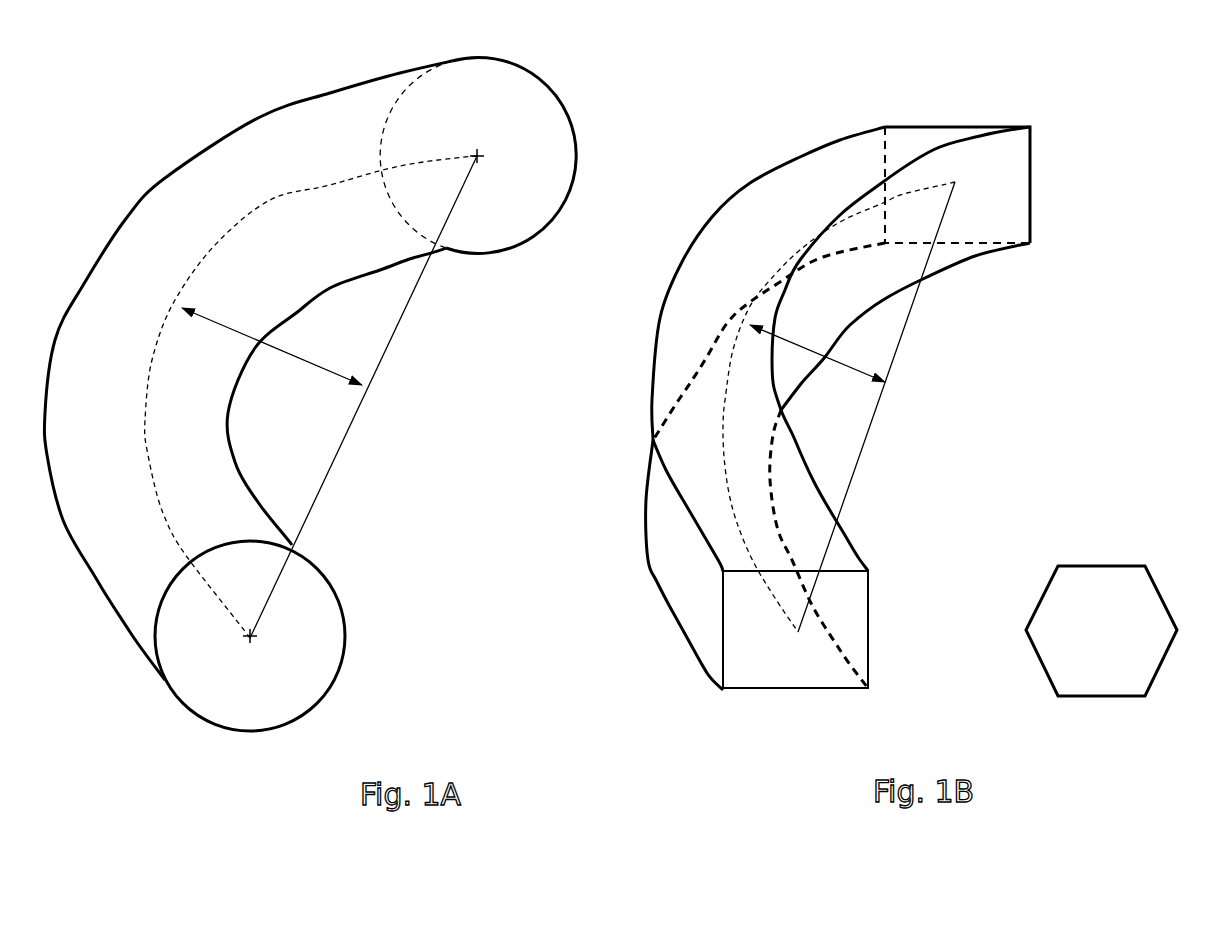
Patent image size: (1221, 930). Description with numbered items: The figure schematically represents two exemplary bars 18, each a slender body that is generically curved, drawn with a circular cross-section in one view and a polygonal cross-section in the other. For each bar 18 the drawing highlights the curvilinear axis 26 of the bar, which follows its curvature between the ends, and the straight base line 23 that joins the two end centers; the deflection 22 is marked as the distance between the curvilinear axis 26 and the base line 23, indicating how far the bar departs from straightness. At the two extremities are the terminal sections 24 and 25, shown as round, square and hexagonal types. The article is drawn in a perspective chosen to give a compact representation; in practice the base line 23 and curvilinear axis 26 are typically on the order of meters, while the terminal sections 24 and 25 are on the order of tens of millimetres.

In FIG. 1A, the bar 18 is at (257, 115).
In FIG. 1B, the bar 18 is at (813, 175).
In FIG. 1A, the deflection 22 is at (328, 383).
In FIG. 1B, the deflection 22 is at (848, 378).
In FIG. 1A, the base line 23 is at (415, 315).
In FIG. 1B, the base line 23 is at (913, 338).
In FIG. 1A, the terminal section 24 is at (178, 608).
In FIG. 1B, the terminal section 24 is at (738, 627).
In FIG. 1A, the terminal section 25 is at (443, 95).
In FIG. 1B, the terminal section 25 is at (935, 127).
In FIG. 1A, the curvilinear axis 26 is at (297, 213).
In FIG. 1B, the curvilinear axis 26 is at (722, 435).